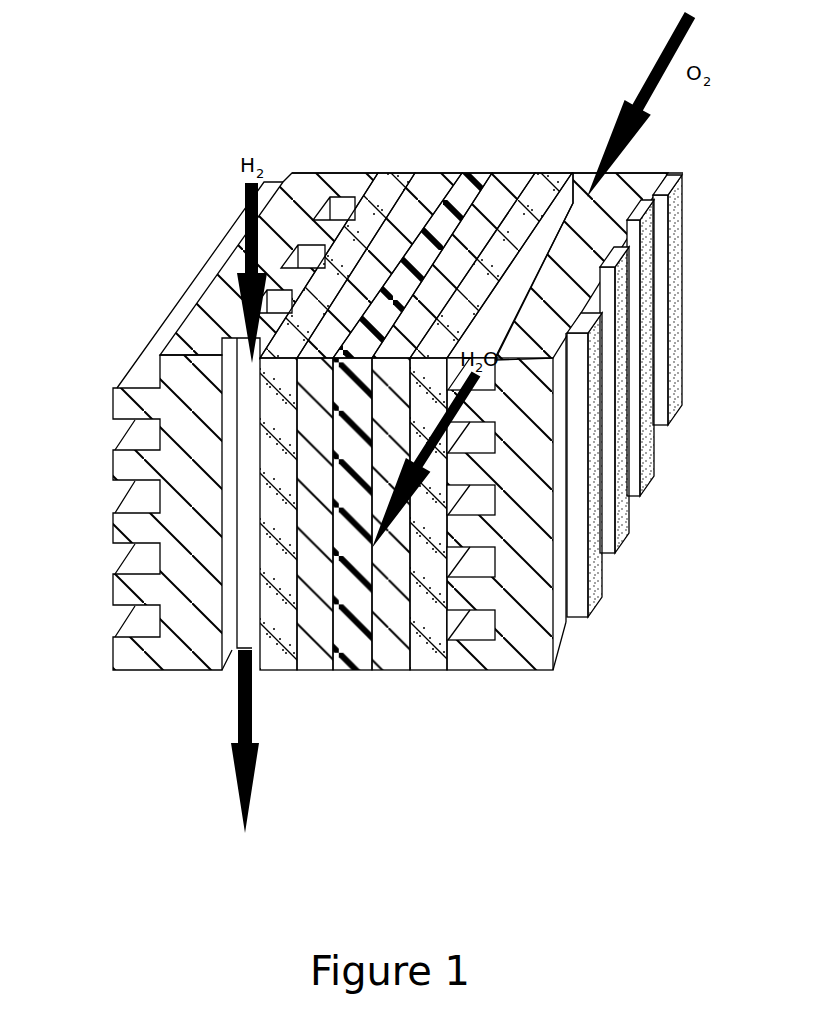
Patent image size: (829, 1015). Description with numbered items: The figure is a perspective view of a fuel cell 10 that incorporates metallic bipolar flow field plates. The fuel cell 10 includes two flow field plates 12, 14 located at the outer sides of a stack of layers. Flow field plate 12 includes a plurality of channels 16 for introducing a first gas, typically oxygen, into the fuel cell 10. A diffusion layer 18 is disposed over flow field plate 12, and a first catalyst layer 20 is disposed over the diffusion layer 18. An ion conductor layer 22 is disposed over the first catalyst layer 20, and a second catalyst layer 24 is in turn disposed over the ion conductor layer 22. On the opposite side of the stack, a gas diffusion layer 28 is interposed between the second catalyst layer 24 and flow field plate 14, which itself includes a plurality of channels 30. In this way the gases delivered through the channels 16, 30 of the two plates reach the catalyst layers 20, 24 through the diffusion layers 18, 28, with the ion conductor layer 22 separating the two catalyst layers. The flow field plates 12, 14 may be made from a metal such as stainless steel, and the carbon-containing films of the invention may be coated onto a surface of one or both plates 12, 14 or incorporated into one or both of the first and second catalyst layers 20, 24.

The fuel cell 10 is at (208, 130).
The flow field plate 12 is at (193, 266).
The flow field plate 14 is at (683, 296).
The channels 16 is at (343, 205).
The diffusion layer 18 is at (305, 192).
The first catalyst layer 20 is at (445, 183).
The ion conductor layer 22 is at (485, 185).
The second catalyst layer 24 is at (511, 188).
The gas diffusion layer 28 is at (548, 190).
The channels 30 is at (470, 623).